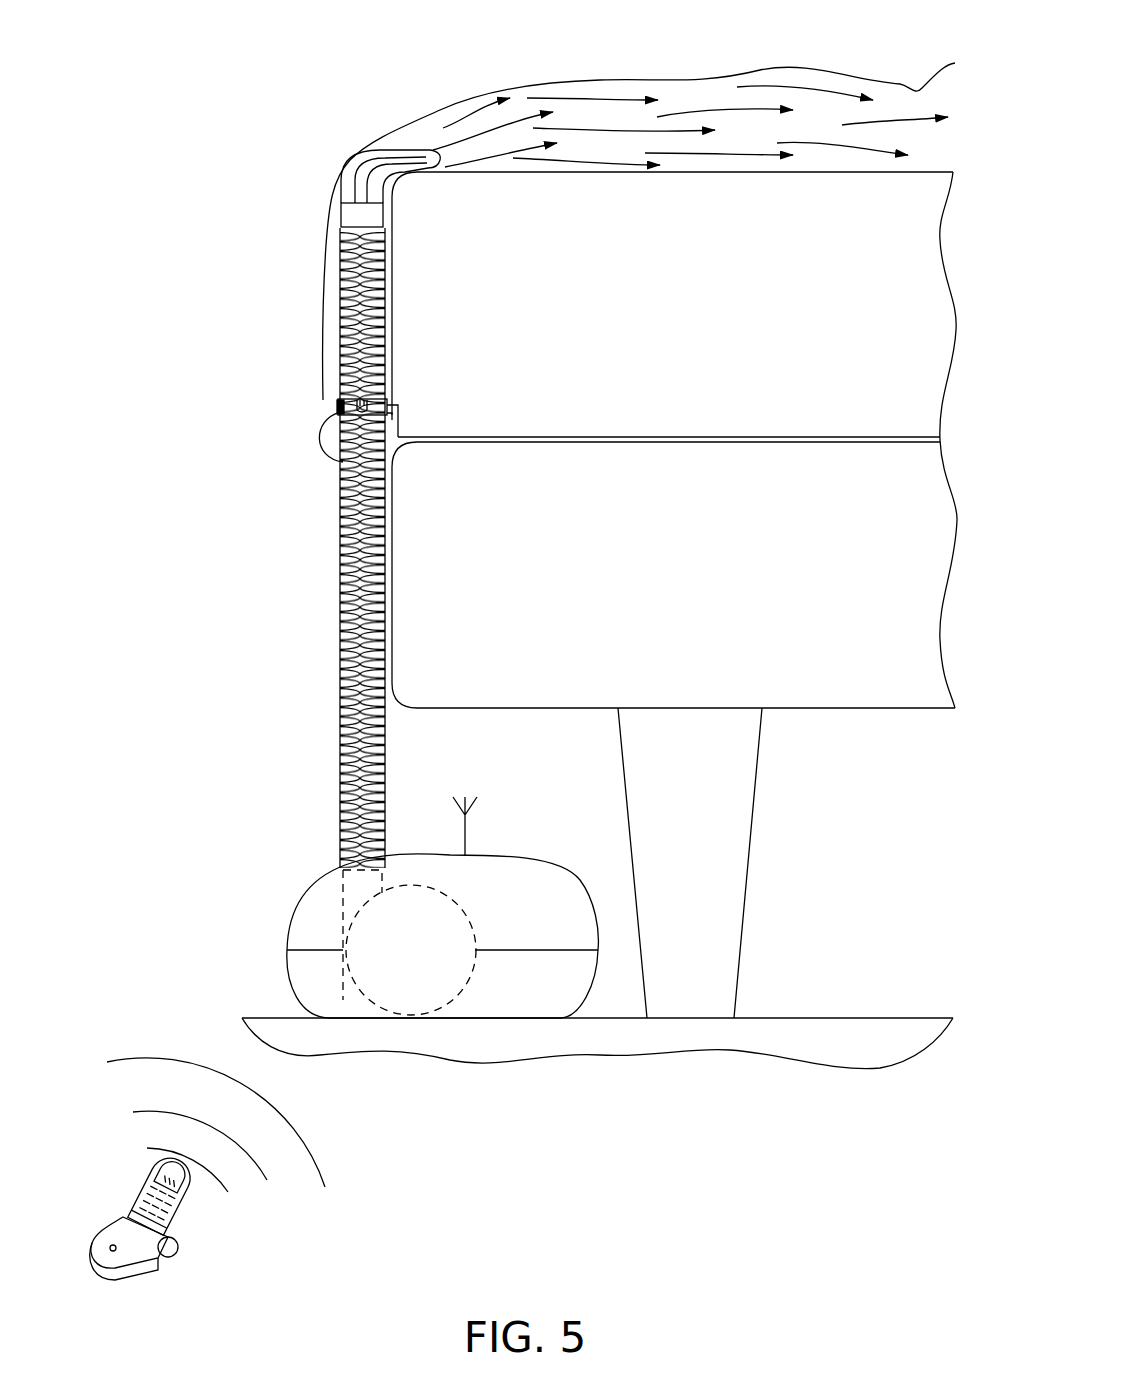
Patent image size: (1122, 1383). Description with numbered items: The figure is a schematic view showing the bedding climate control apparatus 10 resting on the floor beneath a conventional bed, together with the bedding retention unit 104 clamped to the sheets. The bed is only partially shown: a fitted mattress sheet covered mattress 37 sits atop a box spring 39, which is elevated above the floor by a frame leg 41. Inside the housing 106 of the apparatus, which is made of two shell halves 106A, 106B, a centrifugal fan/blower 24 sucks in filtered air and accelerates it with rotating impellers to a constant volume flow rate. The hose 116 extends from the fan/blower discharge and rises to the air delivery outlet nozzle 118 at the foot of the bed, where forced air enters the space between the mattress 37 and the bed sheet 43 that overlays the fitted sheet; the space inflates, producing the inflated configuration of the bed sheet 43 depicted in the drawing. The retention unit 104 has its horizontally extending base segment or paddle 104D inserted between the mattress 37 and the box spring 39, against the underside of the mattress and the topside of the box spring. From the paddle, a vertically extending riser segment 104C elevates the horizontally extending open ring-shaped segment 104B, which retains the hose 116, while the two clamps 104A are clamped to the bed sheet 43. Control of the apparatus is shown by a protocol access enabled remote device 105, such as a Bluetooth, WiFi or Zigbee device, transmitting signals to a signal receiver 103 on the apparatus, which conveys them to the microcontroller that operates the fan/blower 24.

The bedding climate control apparatus 10 is at (197, 843).
The centrifugal fan/blower 24 is at (333, 890).
The fitted mattress sheet covered mattress 37 is at (572, 170).
The box spring 39 is at (845, 708).
The frame leg 41 is at (748, 878).
The bed sheet 43 is at (904, 92).
The signal receiver 103 is at (477, 806).
The bedding retention unit 104 is at (212, 355).
The clamps 104A is at (340, 403).
The horizontally extending open ring-shaped segment 104B is at (338, 410).
The vertically extending riser segment 104C is at (388, 428).
The horizontally extending base segment or paddle 104D is at (490, 443).
The protocol access enabled remote device 105 is at (205, 1222).
The housing 106 is at (187, 903).
The shell half 106A is at (285, 943).
The shell half 106B is at (287, 972).
The hose 116 is at (340, 665).
The air delivery outlet nozzle 118 is at (382, 150).